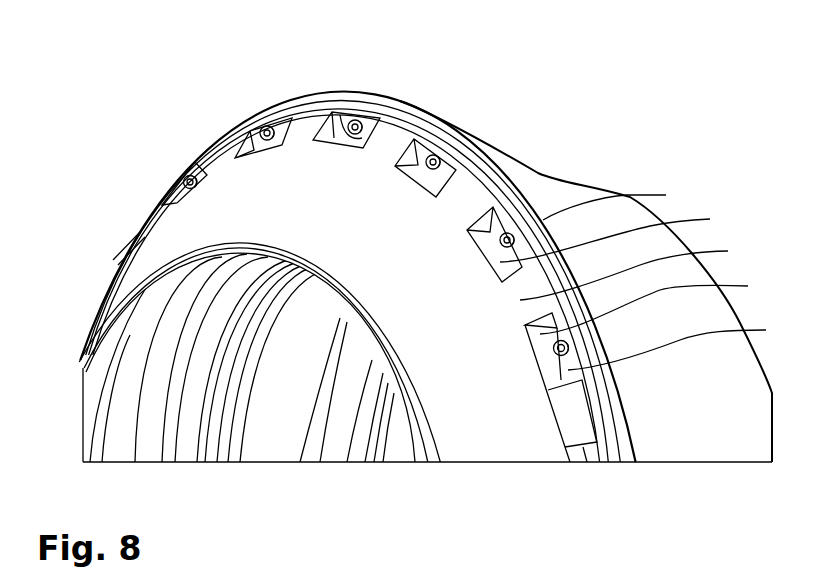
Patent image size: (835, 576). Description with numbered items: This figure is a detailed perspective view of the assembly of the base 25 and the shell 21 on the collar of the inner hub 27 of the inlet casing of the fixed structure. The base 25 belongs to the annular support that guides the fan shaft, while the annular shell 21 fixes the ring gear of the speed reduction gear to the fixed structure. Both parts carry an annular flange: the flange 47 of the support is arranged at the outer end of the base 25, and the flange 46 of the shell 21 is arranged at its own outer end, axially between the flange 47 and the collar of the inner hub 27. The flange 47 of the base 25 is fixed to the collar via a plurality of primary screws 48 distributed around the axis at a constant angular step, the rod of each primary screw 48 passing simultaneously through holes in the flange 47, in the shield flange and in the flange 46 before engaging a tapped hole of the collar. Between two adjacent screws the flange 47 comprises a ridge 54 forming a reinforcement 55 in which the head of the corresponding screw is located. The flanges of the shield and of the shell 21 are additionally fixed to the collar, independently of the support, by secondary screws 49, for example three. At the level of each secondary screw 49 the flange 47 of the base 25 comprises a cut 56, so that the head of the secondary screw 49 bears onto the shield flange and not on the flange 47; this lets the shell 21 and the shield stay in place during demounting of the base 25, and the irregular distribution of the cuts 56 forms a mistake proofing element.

The annular shell 21 is at (133, 383).
The base 25 is at (480, 407).
The inner hub 27 is at (543, 166).
The annular flange of the shell 46 is at (372, 125).
The annular flange of the support 47 is at (659, 387).
The primary screw 48 is at (273, 121).
The secondary screw 49 is at (359, 120).
The ridge 54 is at (392, 152).
The reinforcement 55 is at (258, 132).
The cut 56 is at (353, 118).